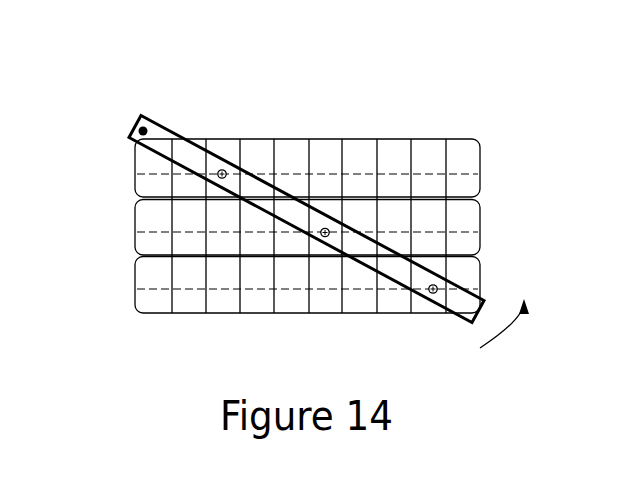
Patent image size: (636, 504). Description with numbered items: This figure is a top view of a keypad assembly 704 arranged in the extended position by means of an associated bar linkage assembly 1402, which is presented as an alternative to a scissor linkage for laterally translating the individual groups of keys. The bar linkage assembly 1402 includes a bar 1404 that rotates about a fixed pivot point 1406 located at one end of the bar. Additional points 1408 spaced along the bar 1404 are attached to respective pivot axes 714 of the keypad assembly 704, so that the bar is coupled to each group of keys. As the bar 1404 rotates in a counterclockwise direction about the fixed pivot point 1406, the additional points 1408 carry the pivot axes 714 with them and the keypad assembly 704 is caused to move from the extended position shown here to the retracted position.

The keypad assembly 704 is at (112, 299).
The pivot axes 714 is at (320, 175).
The bar linkage assembly 1402 is at (306, 179).
The bar 1404 is at (252, 174).
The fixed pivot point 1406 is at (147, 127).
The additional points 1408 is at (217, 176).